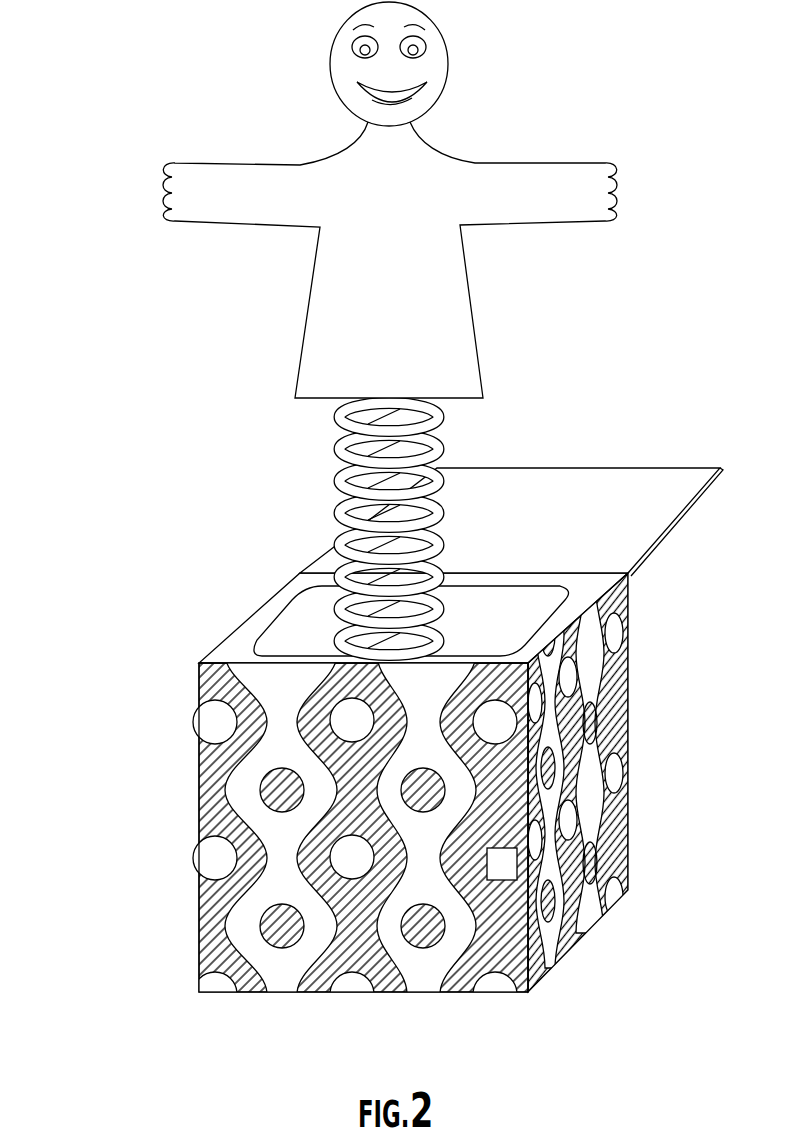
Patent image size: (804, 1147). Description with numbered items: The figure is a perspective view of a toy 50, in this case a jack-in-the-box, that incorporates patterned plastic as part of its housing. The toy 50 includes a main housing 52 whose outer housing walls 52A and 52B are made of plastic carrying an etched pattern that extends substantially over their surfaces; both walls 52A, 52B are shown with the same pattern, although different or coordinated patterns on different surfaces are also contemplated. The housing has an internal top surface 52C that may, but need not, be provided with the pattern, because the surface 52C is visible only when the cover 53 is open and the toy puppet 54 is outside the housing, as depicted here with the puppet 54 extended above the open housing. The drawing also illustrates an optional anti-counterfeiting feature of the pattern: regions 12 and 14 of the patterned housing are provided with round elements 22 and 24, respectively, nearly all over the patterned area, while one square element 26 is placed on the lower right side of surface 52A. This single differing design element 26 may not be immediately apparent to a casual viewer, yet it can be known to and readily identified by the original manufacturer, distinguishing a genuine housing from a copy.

The region 12 is at (203, 948).
The region 14 is at (267, 960).
The round element 22 is at (208, 992).
The round element 24 is at (258, 918).
The square element 26 is at (518, 860).
The toy 50 is at (100, 548).
The main housing 52 is at (198, 750).
The outer housing wall 52A is at (357, 856).
The outer housing wall 52B is at (623, 820).
The internal top surface 52C is at (230, 653).
The cover 53 is at (524, 521).
The toy puppet 54 is at (297, 353).